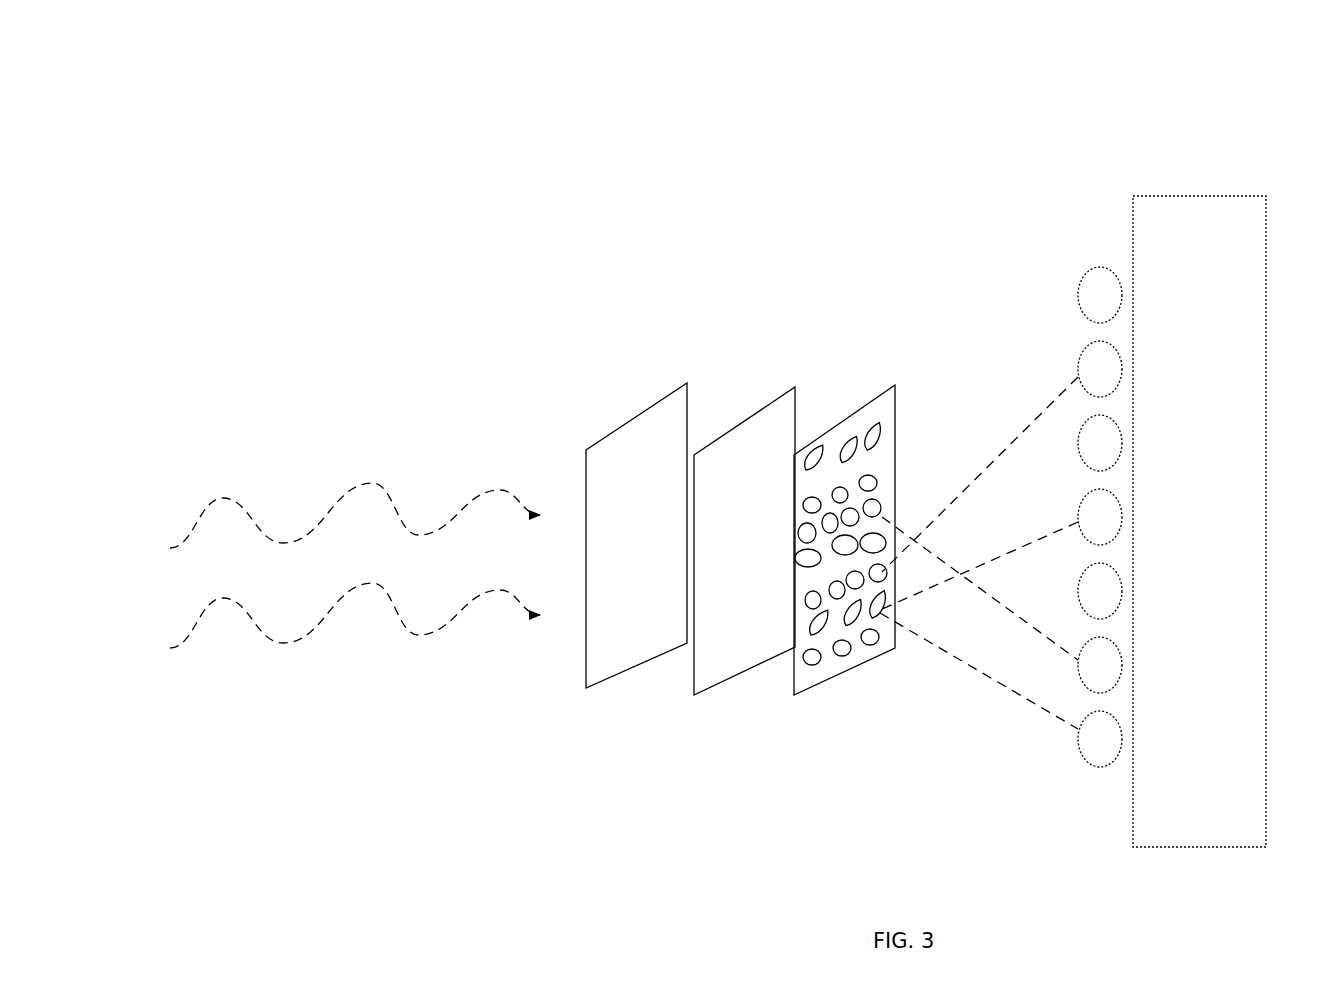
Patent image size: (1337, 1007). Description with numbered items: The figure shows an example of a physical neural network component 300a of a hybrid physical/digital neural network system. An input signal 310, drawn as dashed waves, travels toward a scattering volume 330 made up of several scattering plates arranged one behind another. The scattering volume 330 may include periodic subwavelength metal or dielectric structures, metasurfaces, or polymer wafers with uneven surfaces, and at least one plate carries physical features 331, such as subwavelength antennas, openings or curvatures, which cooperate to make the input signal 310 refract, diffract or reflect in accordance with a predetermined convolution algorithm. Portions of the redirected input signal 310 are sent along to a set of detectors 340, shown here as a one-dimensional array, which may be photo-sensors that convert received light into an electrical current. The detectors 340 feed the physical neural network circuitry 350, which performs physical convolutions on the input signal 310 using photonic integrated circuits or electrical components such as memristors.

The physical neural network system 300a is at (450, 85).
The input signal 310 is at (355, 565).
The scattering volume 330 is at (677, 423).
The physical features 331 is at (862, 482).
The detectors 340 is at (1001, 517).
The physical neural network circuitry 350 is at (1199, 521).